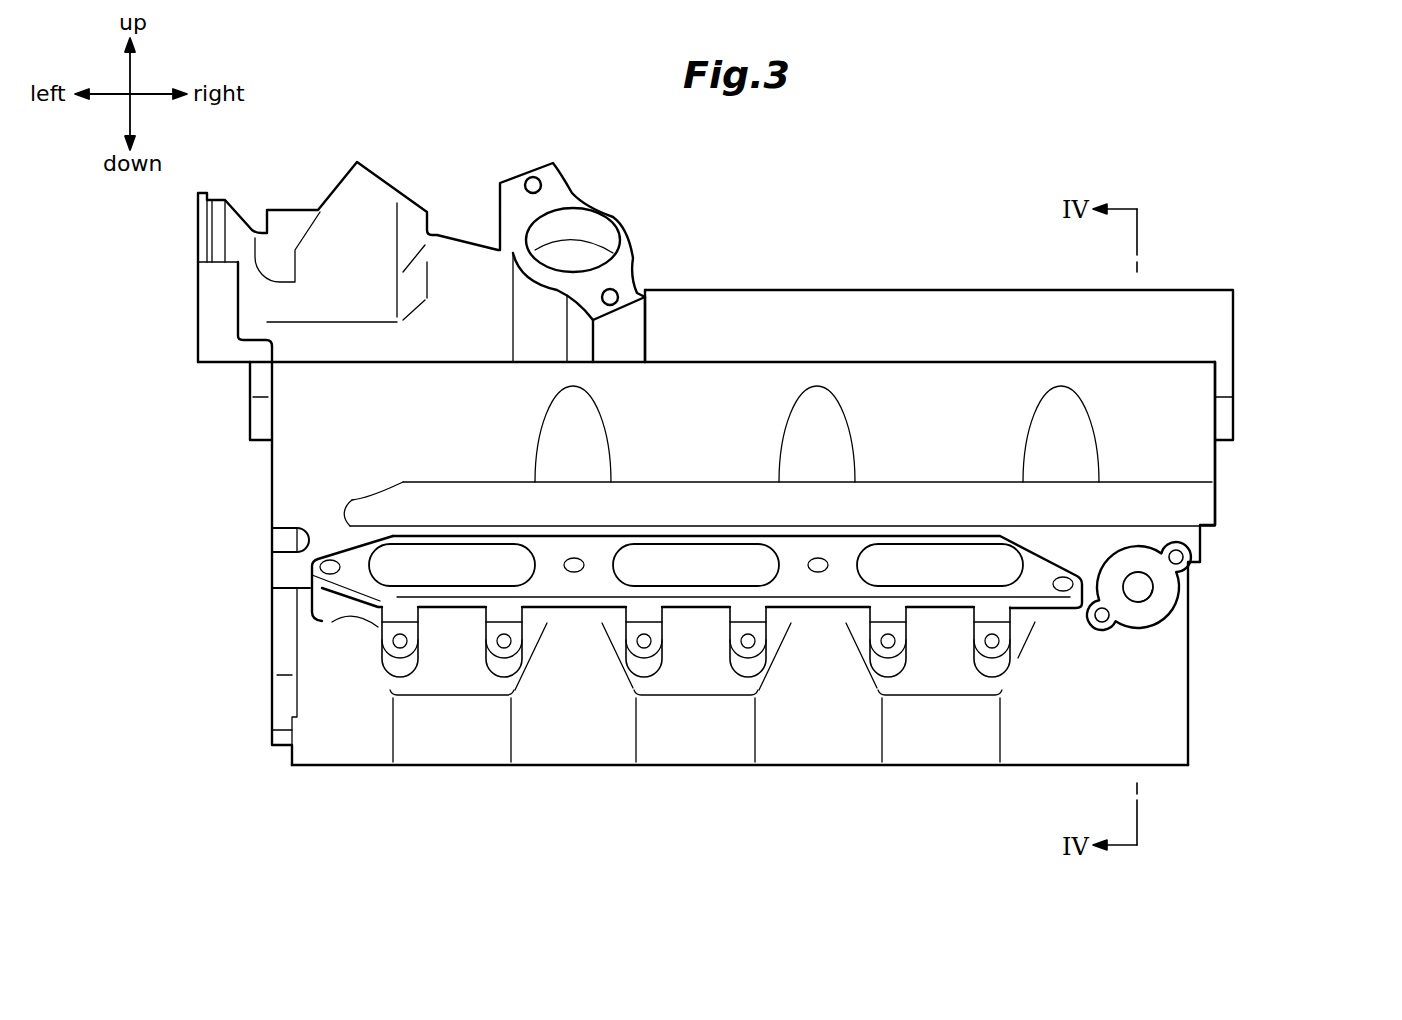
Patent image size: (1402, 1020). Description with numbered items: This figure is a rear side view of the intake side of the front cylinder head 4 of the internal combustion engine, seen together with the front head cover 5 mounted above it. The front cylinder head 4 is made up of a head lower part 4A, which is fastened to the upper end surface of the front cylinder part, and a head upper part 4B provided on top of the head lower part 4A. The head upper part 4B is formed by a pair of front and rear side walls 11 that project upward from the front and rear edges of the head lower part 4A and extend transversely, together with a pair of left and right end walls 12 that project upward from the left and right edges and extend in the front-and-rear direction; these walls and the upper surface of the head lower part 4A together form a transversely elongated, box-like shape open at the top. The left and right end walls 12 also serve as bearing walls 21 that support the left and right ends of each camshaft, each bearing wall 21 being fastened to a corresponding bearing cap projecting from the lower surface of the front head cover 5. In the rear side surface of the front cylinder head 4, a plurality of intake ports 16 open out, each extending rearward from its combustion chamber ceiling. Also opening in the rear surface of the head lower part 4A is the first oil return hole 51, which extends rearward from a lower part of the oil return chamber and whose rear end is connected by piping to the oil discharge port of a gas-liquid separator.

The front cylinder head 4 is at (278, 502).
The head lower part 4A is at (1173, 735).
The head upper part 4B is at (1208, 469).
The front head cover 5 is at (882, 295).
The side wall 11 is at (990, 378).
The end wall 12 is at (853, 511).
The bearing wall 21 is at (1215, 513).
The intake port 16 is at (478, 584).
The first oil return hole 51 is at (1152, 588).